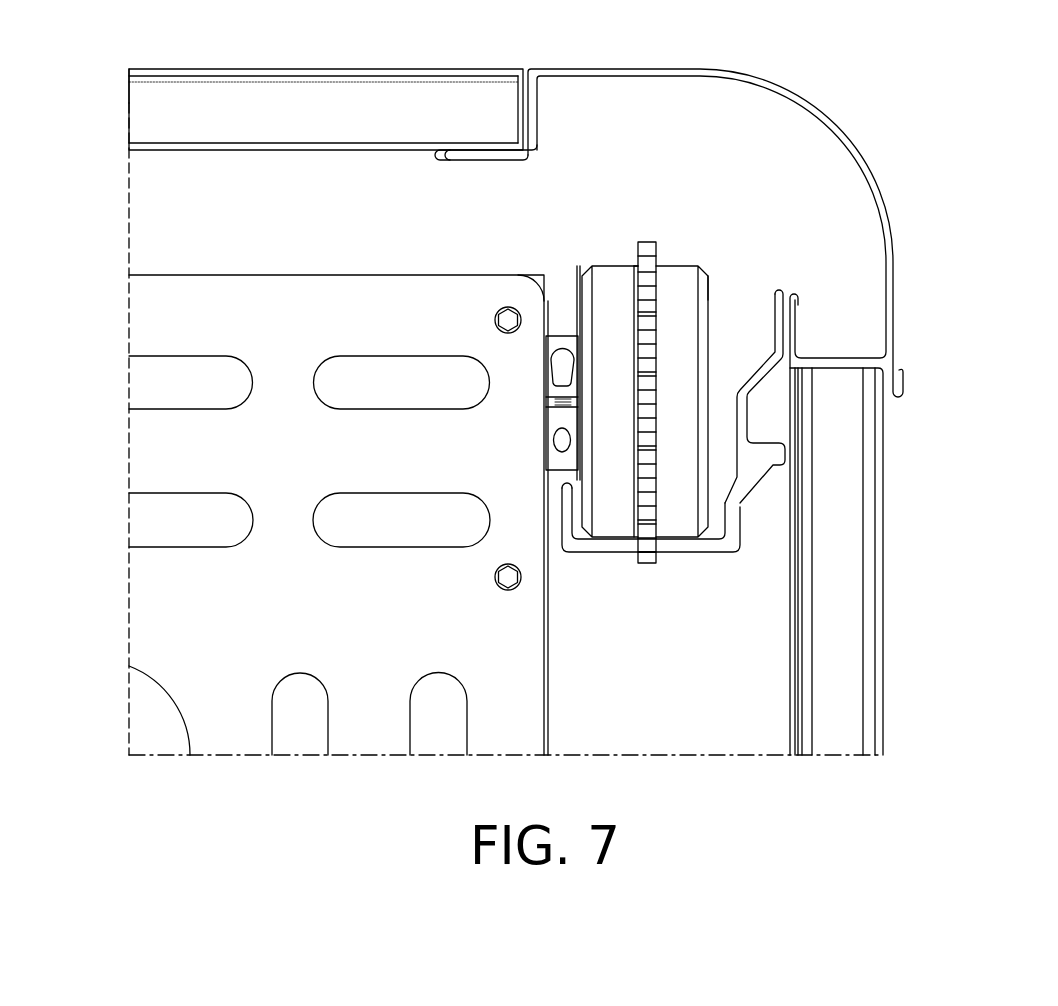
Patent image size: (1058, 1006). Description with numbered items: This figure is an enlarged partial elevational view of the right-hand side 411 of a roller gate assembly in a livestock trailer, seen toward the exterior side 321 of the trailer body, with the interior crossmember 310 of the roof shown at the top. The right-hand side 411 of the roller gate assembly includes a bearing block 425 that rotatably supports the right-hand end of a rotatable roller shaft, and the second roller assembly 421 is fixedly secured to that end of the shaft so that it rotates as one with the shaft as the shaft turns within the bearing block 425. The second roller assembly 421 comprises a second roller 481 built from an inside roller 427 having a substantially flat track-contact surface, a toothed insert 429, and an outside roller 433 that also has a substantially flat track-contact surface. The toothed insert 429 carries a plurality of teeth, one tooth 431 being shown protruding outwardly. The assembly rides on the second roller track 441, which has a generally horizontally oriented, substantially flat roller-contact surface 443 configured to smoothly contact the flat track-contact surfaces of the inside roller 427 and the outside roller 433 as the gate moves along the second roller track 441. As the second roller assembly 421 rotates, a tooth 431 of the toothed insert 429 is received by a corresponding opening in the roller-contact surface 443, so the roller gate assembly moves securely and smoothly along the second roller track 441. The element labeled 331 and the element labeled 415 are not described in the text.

The interior crossmember 310 is at (315, 100).
The cover profile 331 is at (801, 97).
The right-hand side 411 is at (556, 246).
The toothed insert 429 is at (647, 242).
The bearing block 425 is at (560, 336).
The second roller 481 is at (661, 260).
The outside roller 433 is at (678, 277).
The second roller assembly 421 is at (730, 261).
The second roller track 441 is at (752, 463).
The exterior side 321 is at (847, 565).
The perforated panel 415 is at (168, 606).
The inside roller 427 is at (607, 531).
The roller-contact surface 443 is at (695, 543).
The tooth 431 is at (650, 566).